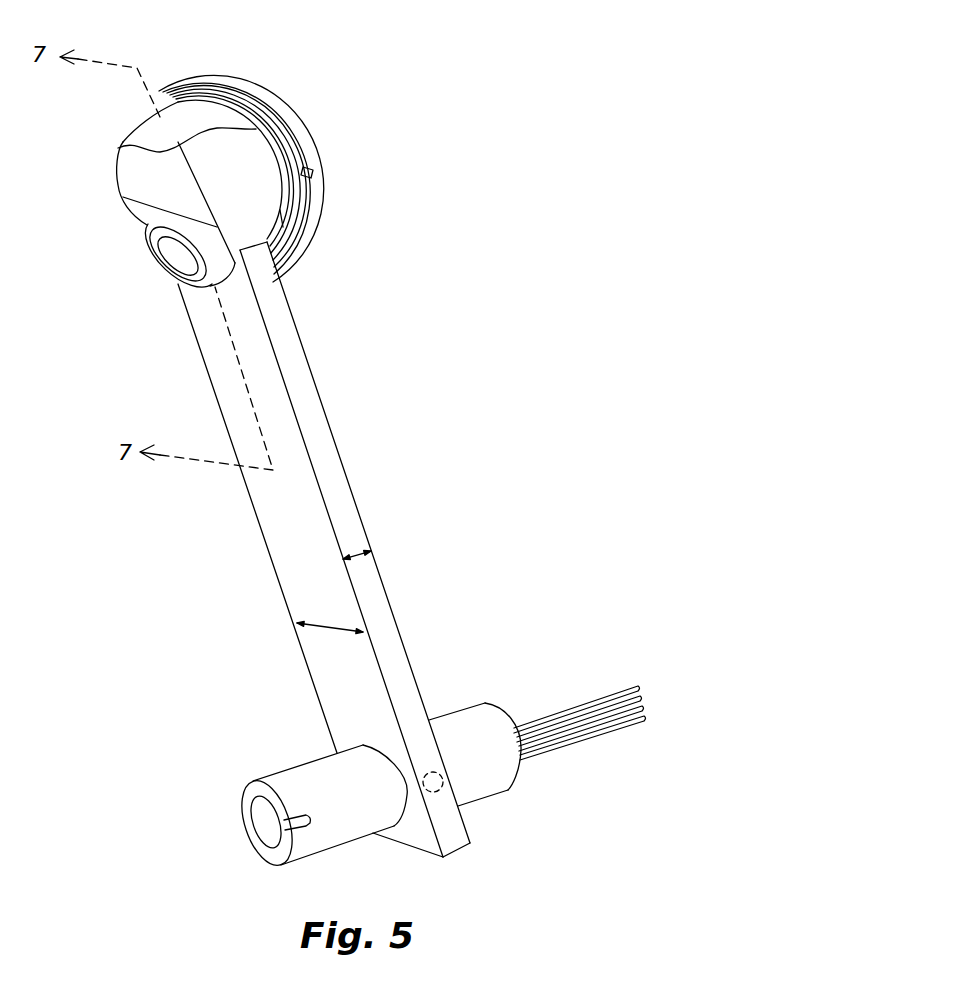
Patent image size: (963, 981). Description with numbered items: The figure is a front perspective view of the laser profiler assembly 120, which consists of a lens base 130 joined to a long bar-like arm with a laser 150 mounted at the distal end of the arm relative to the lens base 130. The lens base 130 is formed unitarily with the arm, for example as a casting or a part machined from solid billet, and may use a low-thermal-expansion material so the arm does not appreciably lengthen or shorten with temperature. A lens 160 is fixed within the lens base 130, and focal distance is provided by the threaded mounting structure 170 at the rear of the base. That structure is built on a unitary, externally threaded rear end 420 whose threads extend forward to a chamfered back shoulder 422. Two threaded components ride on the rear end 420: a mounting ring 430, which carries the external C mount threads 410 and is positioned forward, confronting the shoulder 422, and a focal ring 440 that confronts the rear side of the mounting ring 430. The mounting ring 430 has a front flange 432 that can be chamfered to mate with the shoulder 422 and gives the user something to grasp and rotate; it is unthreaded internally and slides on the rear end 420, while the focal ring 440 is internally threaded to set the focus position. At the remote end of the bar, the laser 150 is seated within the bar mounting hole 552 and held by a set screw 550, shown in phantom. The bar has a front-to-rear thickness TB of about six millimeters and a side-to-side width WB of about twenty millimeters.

The laser profiler assembly 120 is at (327, 381).
The lens base 130 is at (123, 182).
The laser 150 is at (465, 722).
The lens 160 is at (147, 235).
The threaded mounting structure 170 is at (322, 243).
The external threads 410 is at (226, 78).
The threaded rear end 420 is at (295, 120).
The back shoulder 422 is at (130, 145).
The mounting ring 430 is at (297, 167).
The front flange 432 is at (180, 92).
The focal ring 440 is at (270, 110).
The set screw 550 is at (440, 790).
The bar mounting hole 552 is at (390, 742).
The front-to-rear thickness TB is at (358, 562).
The side-to-side width WB is at (325, 628).